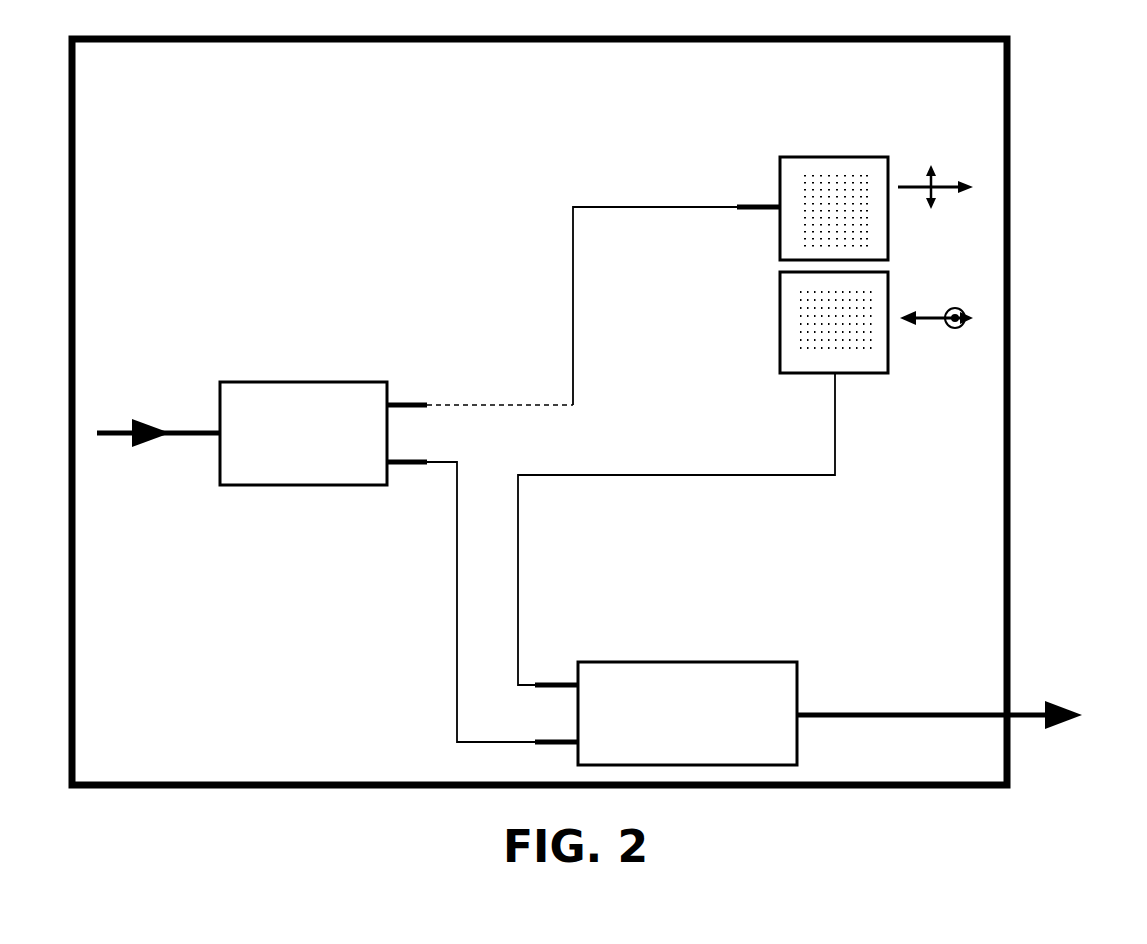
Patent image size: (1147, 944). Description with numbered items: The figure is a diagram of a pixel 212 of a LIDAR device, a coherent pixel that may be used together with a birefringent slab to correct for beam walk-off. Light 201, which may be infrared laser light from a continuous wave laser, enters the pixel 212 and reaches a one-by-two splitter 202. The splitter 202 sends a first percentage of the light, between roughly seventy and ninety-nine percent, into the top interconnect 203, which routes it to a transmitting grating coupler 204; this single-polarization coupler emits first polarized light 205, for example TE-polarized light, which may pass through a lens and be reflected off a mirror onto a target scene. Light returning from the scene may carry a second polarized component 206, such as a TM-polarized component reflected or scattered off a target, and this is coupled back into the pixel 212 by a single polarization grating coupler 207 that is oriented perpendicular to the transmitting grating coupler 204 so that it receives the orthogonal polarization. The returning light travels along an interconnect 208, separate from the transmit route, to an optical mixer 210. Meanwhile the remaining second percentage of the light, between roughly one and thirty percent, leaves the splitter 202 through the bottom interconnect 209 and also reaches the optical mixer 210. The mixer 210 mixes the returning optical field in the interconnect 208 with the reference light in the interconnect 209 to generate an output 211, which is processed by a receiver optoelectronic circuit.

The light 201 is at (152, 405).
The 1×2 splitter 202 is at (310, 378).
The top interconnect 203 is at (617, 200).
The transmitting grating coupler 204 is at (830, 140).
The first polarized light 205 is at (922, 160).
The second polarized component 206 is at (928, 338).
The single polarization grating coupler 207 is at (775, 322).
The interconnect 208 is at (638, 470).
The bottom interconnect 209 is at (447, 588).
The optical mixer 210 is at (705, 650).
The output 211 is at (868, 703).
The pixel 212 is at (1015, 540).